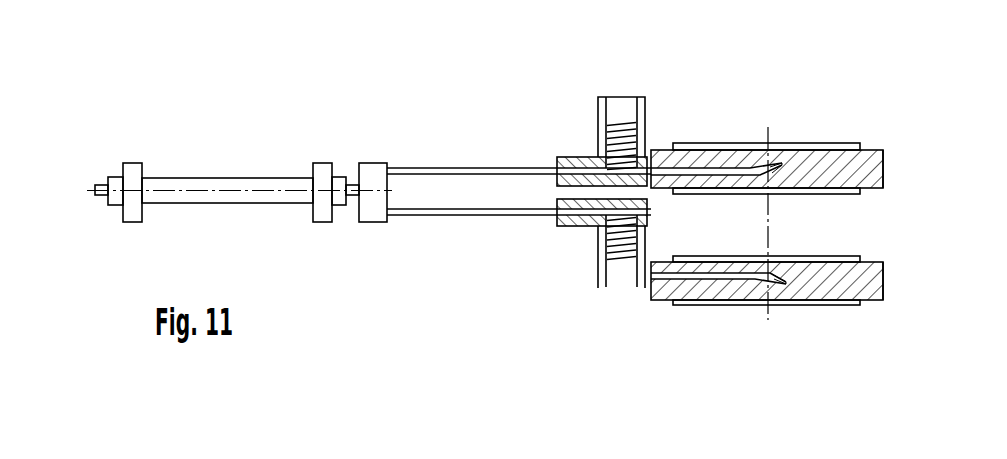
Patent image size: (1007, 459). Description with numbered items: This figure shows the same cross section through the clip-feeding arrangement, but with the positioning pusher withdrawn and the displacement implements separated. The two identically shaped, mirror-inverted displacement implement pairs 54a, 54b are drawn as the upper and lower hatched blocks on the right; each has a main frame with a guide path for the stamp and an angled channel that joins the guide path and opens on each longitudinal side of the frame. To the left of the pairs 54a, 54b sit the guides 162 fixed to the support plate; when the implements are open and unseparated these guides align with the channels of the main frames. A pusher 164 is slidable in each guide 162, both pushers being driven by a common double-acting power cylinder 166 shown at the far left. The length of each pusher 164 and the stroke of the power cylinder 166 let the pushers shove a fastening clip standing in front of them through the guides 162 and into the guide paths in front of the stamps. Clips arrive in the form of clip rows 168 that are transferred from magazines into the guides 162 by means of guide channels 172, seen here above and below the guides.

The displacement implement pair 54a is at (798, 119).
The displacement implement pair 54b is at (791, 306).
The guide 162 is at (643, 168).
The pusher 164 is at (440, 170).
The double-acting power cylinder 166 is at (213, 187).
The clip row 168 is at (620, 127).
The guide channel 172 is at (628, 107).